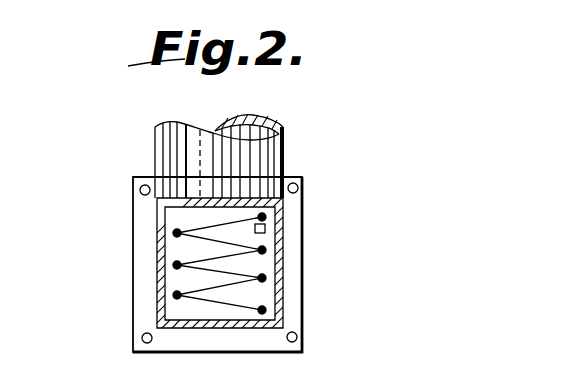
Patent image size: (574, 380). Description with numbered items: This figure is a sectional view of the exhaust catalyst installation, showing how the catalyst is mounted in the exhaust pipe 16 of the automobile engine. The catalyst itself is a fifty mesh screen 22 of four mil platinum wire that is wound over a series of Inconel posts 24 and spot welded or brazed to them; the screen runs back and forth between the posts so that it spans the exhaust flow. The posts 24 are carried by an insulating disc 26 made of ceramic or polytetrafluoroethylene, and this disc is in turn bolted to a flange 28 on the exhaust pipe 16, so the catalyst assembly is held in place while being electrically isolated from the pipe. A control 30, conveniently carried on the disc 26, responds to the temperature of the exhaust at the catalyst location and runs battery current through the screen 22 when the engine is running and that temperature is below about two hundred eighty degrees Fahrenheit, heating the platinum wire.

The exhaust pipe 16 is at (180, 153).
The screen 22 is at (238, 272).
The posts 24 is at (175, 293).
The insulating disc 26 is at (260, 295).
The flange 28 is at (145, 317).
The control 30 is at (267, 227).